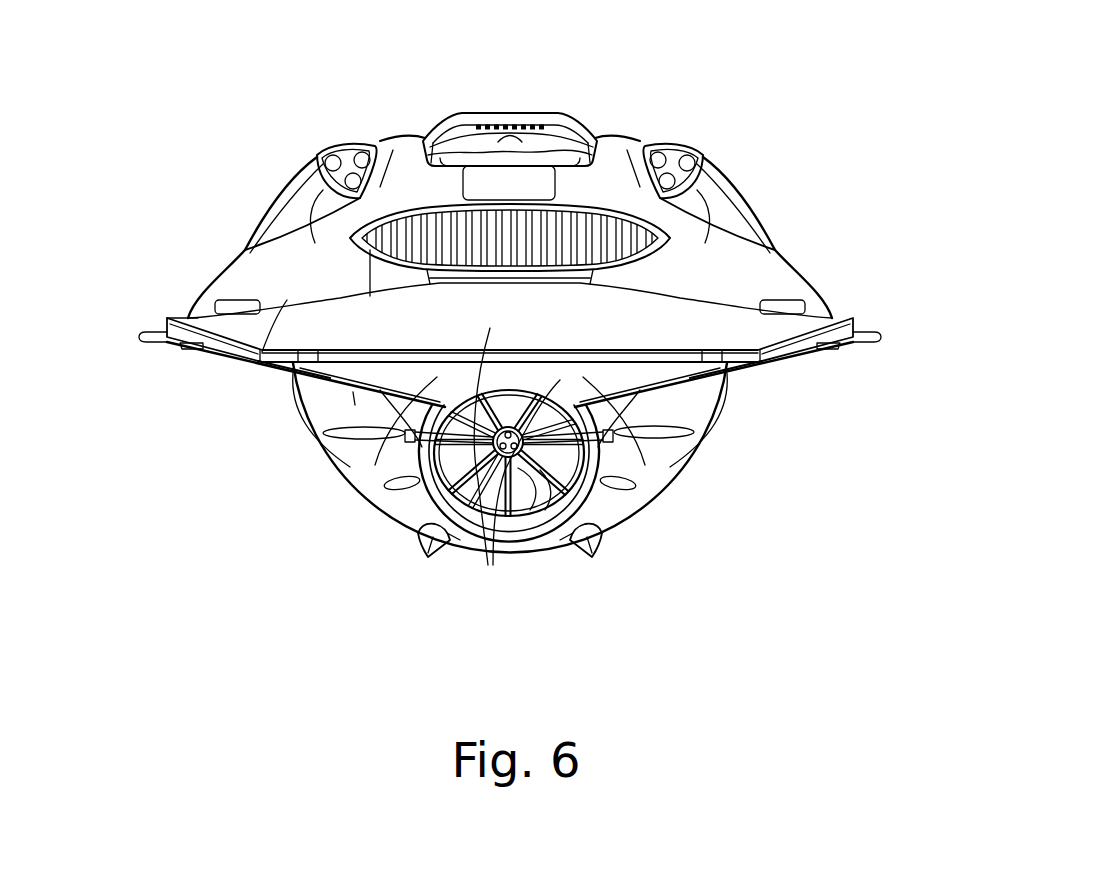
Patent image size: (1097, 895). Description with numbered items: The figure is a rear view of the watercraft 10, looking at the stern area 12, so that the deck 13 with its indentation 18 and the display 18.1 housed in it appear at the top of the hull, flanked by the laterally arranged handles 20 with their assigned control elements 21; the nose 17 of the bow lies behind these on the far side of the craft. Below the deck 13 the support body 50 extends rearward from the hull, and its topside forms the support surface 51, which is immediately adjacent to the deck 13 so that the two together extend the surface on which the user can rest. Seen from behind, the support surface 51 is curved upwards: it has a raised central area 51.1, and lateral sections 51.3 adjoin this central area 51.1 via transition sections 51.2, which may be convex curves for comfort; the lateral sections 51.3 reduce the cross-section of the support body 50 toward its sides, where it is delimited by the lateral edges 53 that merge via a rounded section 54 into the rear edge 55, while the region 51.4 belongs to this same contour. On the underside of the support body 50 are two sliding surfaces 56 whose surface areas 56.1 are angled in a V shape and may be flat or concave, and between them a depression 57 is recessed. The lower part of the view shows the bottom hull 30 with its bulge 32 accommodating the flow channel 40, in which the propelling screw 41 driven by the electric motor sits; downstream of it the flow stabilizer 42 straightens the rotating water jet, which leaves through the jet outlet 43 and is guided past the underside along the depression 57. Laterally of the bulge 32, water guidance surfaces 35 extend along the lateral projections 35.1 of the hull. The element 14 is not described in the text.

The watercraft 10 is at (885, 320).
The stern area 12 is at (633, 327).
The deck 13 is at (517, 112).
The housing box 14 is at (490, 200).
The nose 17 is at (323, 368).
The indentation 18 is at (567, 128).
The display 18.1 is at (497, 205).
The handles 20 is at (316, 165).
The control elements 21 is at (335, 148).
The bottom hull 30 is at (521, 577).
The bulge 32 is at (417, 490).
The water guidance surfaces 35 is at (313, 395).
The lateral projections 35.1 is at (140, 333).
The flow channel 40 is at (567, 463).
The propelling screw 41 is at (423, 500).
The flow stabilizer 42 is at (617, 515).
The jet outlet 43 is at (480, 497).
The support body 50 is at (757, 352).
The support surface 51 is at (733, 262).
The raised central area 51.1 is at (480, 510).
The transition sections 51.2 is at (370, 280).
The lateral sections 51.3 is at (287, 300).
The hull lower corner 51.4 is at (207, 318).
The lateral edges 53 is at (190, 345).
The rounded section 54 is at (285, 366).
The rear edge 55 is at (290, 378).
The sliding surfaces 56 is at (655, 455).
The surface areas 56.1 is at (355, 412).
The depression 57 is at (583, 540).